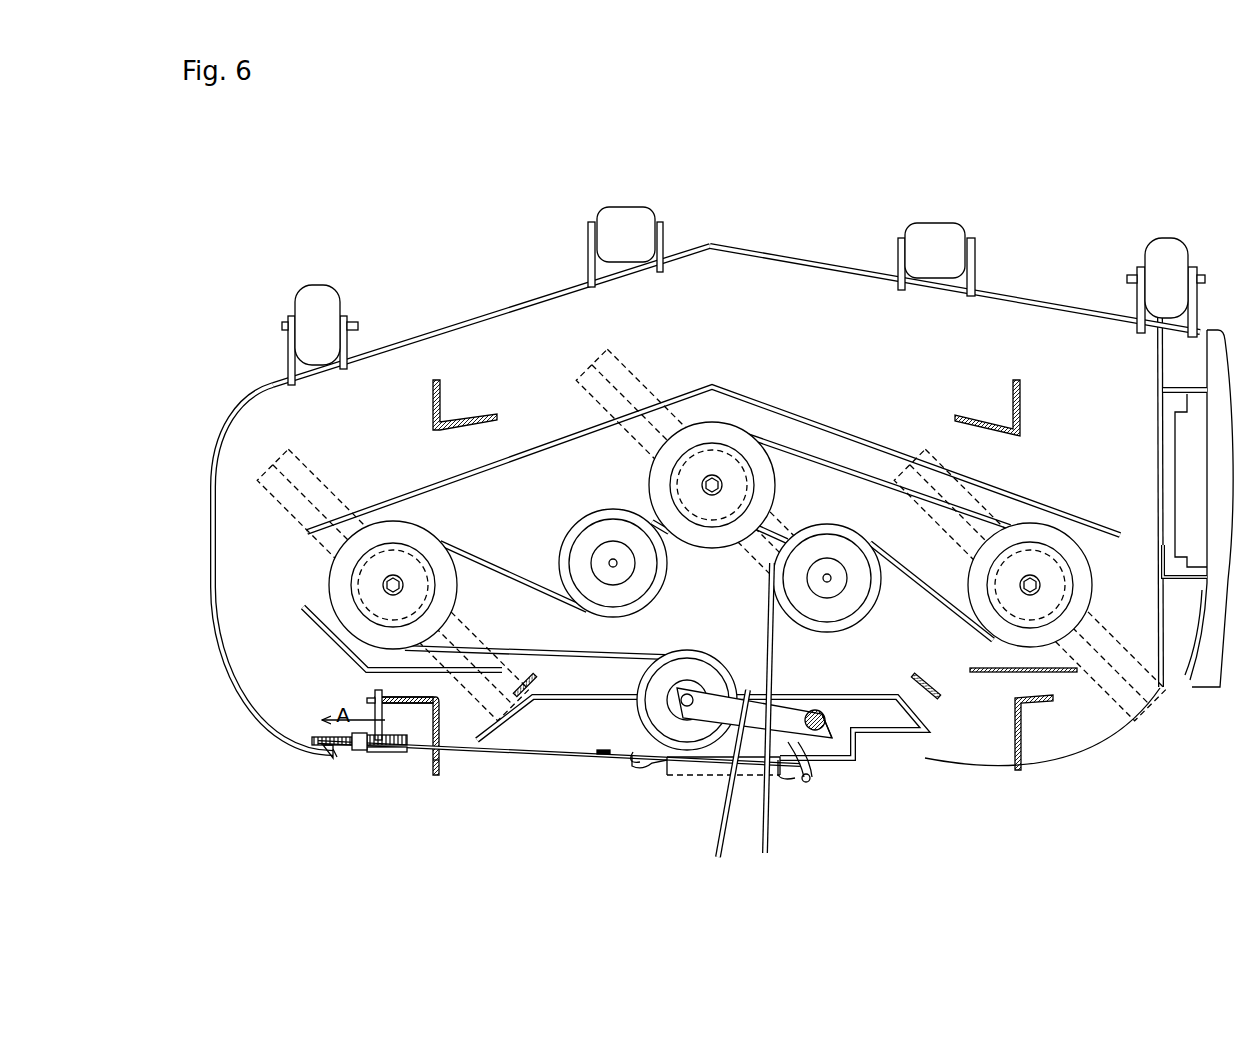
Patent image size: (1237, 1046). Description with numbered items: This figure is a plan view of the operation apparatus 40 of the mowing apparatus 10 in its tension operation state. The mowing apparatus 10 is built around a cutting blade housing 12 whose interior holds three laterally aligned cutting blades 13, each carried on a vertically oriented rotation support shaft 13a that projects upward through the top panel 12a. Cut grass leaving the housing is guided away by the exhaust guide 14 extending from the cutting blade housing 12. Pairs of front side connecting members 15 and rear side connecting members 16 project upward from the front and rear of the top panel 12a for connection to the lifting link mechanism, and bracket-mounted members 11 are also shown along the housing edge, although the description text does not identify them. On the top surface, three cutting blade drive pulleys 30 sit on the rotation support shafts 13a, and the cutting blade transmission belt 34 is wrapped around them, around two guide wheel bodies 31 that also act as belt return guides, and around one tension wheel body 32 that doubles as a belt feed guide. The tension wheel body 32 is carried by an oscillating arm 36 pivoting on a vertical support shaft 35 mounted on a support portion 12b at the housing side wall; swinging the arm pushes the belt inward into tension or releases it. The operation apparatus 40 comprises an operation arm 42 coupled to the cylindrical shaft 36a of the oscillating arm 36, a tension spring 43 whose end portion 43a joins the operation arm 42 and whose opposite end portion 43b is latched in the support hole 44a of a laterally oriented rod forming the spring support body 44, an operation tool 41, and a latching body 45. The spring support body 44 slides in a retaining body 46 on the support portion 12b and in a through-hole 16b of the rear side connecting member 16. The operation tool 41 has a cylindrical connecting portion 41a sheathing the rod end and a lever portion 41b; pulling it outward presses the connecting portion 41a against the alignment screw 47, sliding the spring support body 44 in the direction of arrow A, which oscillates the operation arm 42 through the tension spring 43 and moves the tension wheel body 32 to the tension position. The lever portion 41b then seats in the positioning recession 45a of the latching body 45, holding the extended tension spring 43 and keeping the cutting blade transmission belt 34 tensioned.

The mowing apparatus 10 is at (425, 296).
The anti-scalp roller bracket 11 is at (300, 302).
The cutting blade housing 12 is at (1020, 297).
The top panel 12a is at (756, 283).
The support portion 12b is at (880, 722).
The cutting blade 13 is at (316, 482).
The rotation support shaft 13a is at (380, 585).
The exhaust guide 14 is at (1198, 690).
The front side connecting member 15 is at (433, 410).
The rear side connecting member 16 is at (440, 726).
The through-hole 16b is at (445, 765).
The cutting blade drive pulley 30 is at (415, 548).
The guide wheel body 31 is at (572, 542).
The tension wheel body 32 is at (688, 668).
The cutting blade transmission belt 34 is at (815, 455).
The support shaft 35 is at (818, 712).
The oscillating arm 36 is at (745, 698).
The cylindrical shaft 36a is at (830, 718).
The operation apparatus 40 is at (328, 748).
The operation tool 41 is at (373, 789).
The connecting portion 41a is at (350, 770).
The lever portion 41b is at (396, 750).
The operation arm 42 is at (808, 768).
The tension spring 43 is at (705, 775).
The end portion 43a is at (792, 778).
The end portion 43b is at (640, 765).
The spring support body 44 is at (515, 760).
The support hole 44a is at (637, 757).
The latching body 45 is at (401, 697).
The positioning recession 45a is at (375, 700).
The retaining body 46 is at (603, 750).
The alignment screw 47 is at (345, 752).